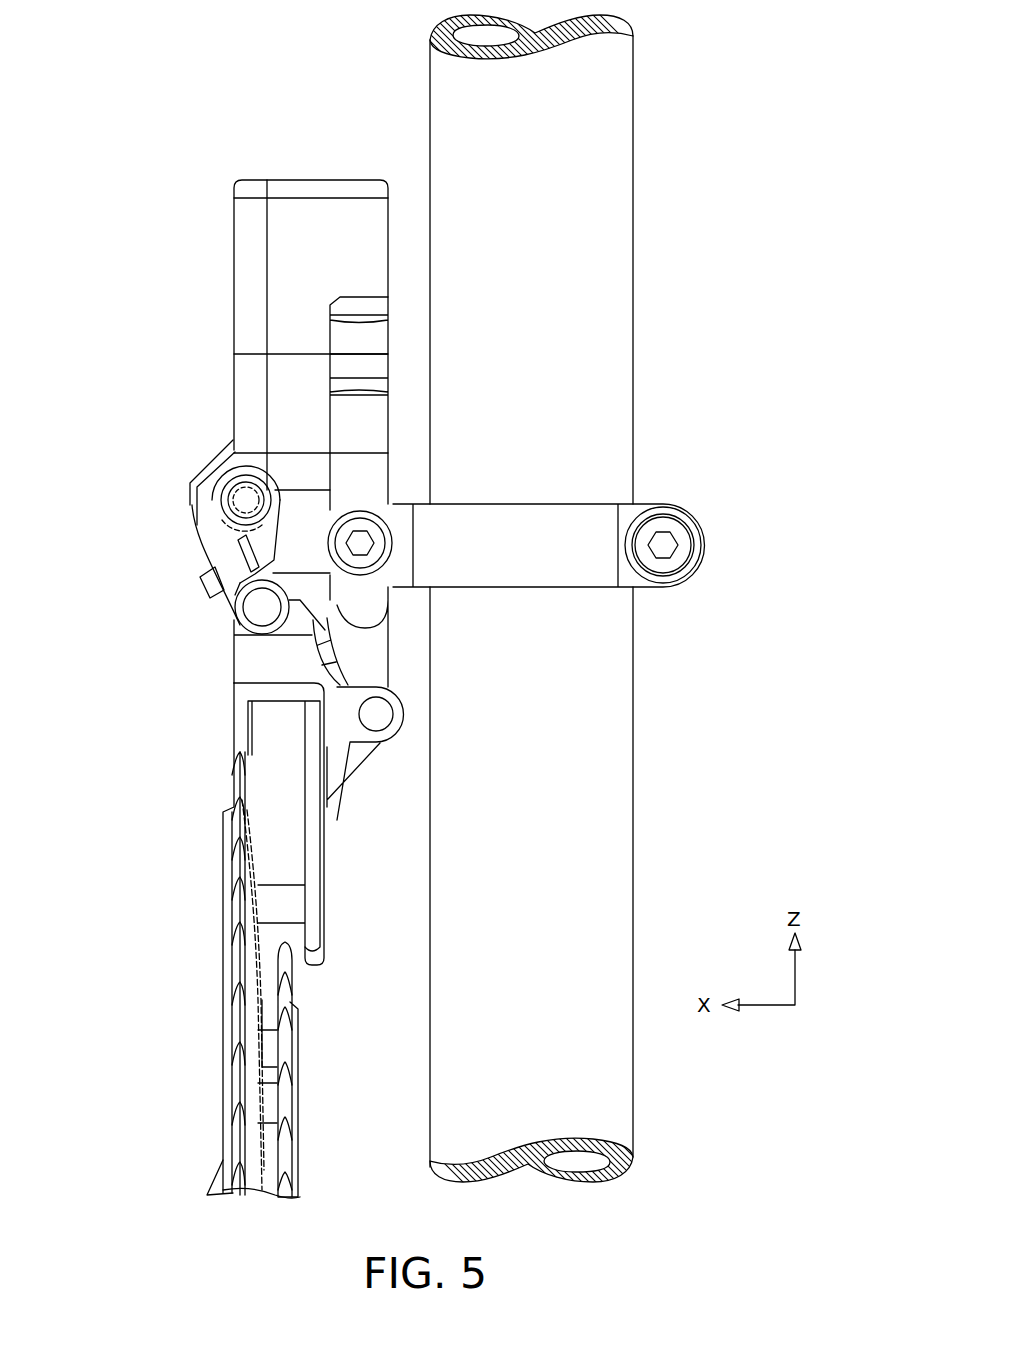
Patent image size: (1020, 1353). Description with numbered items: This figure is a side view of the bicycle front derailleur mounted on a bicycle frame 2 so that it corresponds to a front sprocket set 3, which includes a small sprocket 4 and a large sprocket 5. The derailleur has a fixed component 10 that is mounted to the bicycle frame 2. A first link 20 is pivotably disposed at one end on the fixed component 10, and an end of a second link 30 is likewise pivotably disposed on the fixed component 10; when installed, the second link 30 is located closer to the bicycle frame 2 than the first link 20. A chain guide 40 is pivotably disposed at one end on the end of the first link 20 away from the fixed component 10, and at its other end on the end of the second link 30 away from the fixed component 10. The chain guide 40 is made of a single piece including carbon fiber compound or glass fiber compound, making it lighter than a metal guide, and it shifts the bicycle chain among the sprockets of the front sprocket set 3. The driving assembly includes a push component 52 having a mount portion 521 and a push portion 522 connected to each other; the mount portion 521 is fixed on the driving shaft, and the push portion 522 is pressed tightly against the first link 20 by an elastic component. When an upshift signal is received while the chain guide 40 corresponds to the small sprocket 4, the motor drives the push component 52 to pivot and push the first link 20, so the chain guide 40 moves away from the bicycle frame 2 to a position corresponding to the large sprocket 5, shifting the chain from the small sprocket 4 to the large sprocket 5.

The bicycle frame 2 is at (612, 360).
The fixed component 10 is at (372, 473).
The first link 20 is at (208, 557).
The second link 30 is at (372, 662).
The chain guide 40 is at (222, 683).
The front sprocket set 3 is at (212, 1055).
The small sprocket 4 is at (282, 1110).
The large sprocket 5 is at (240, 1103).
The push component 52 is at (118, 479).
The mount portion 521 is at (232, 523).
The push portion 522 is at (237, 553).